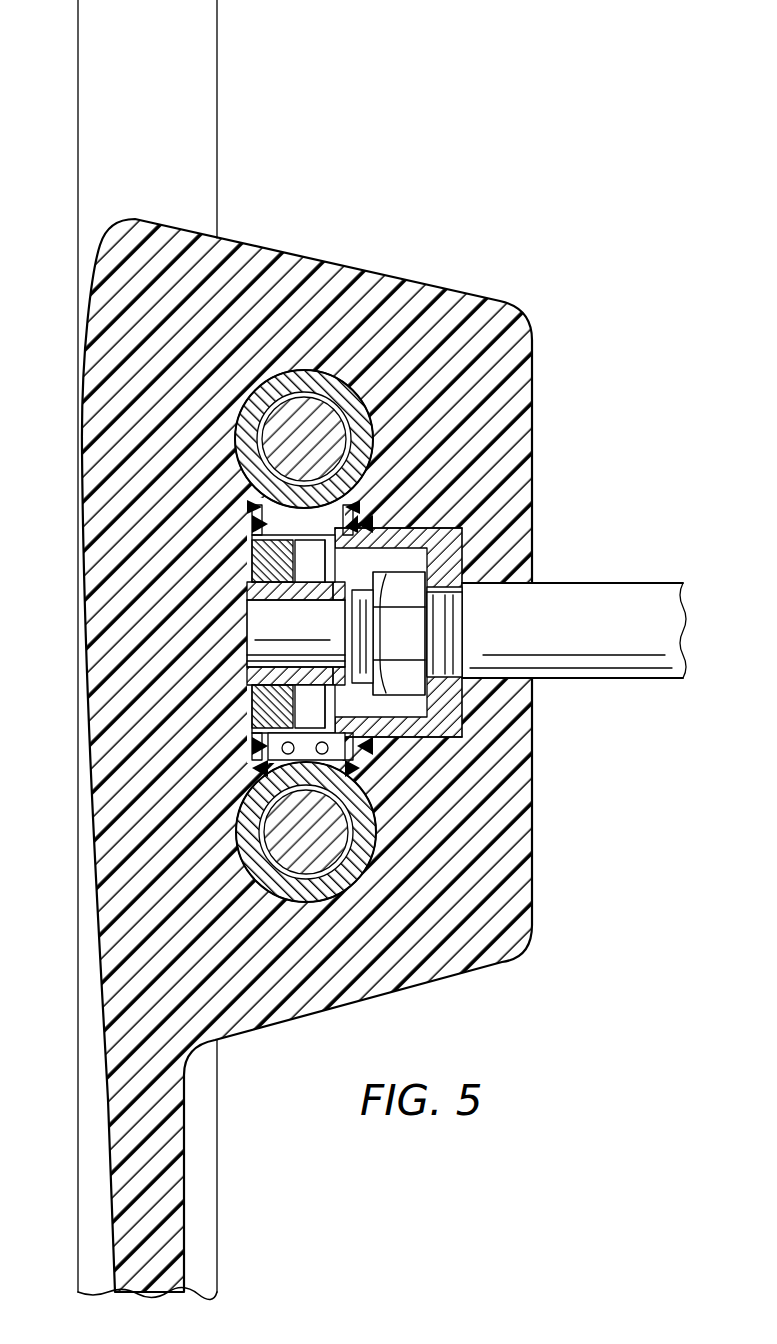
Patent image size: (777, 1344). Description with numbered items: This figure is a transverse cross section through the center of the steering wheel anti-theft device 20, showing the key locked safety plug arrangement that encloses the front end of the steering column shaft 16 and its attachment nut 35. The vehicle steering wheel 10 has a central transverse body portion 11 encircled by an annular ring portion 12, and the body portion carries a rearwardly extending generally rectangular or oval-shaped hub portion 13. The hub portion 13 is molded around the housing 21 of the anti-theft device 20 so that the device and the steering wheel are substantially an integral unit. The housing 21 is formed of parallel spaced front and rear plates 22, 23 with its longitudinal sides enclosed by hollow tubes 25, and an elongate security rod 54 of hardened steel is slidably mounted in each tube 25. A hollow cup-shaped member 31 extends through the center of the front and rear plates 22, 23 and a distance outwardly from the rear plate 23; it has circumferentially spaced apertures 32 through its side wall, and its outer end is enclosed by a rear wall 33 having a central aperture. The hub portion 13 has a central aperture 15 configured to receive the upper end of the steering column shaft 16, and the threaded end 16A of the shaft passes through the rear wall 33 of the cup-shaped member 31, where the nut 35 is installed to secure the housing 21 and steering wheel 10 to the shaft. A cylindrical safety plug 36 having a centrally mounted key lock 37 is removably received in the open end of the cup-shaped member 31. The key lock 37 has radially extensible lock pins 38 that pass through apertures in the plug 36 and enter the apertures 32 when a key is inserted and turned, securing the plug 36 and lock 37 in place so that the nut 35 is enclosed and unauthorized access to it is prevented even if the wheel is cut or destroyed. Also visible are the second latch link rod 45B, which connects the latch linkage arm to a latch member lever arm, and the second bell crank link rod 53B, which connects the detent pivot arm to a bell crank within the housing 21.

The vehicle steering wheel 10 is at (66, 226).
The central transverse body portion 11 is at (432, 300).
The annular ring portion 12 is at (205, 146).
The hub portion 13 is at (306, 1005).
The central aperture 15 is at (503, 584).
The steering column shaft 16 is at (622, 628).
The threaded end 16A is at (571, 641).
The steering wheel anti-theft device 20 is at (326, 750).
The housing 21 is at (236, 503).
The front plate 22 is at (243, 768).
The rear plate 23 is at (362, 510).
The longitudinal hollow tube 25 is at (345, 378).
The cup-shaped member 31 is at (440, 740).
The apertures 32 is at (268, 541).
The rear wall 33 is at (462, 538).
The nut 35 is at (467, 525).
The cylindrical safety plug 36 is at (247, 571).
The key lock 37 is at (305, 636).
The lock pins 38 is at (250, 500).
The second latch link rod 45B is at (362, 766).
The second bell crank link rod 53B is at (262, 752).
The security rod 54 is at (290, 412).